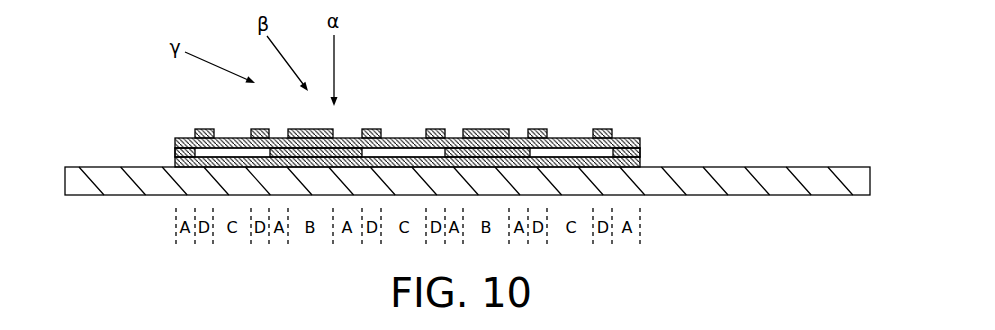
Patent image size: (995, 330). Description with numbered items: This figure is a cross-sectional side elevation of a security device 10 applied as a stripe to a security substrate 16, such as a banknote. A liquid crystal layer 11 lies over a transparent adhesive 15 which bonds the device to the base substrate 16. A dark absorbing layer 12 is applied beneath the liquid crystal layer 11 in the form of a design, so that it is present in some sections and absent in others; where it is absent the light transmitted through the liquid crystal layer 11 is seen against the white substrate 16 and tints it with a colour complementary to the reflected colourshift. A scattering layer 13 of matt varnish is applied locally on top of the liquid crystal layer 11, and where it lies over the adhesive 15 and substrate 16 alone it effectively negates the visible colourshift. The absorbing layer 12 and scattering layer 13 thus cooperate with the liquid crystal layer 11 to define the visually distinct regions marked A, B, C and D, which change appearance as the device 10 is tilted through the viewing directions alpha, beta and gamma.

The security device 10 is at (170, 129).
The liquid crystal layer 11 is at (641, 143).
The absorbing layer 12 is at (349, 150).
The scattering layer 13 is at (512, 131).
The transparent adhesive 15 is at (641, 160).
The security substrate 16 is at (103, 196).